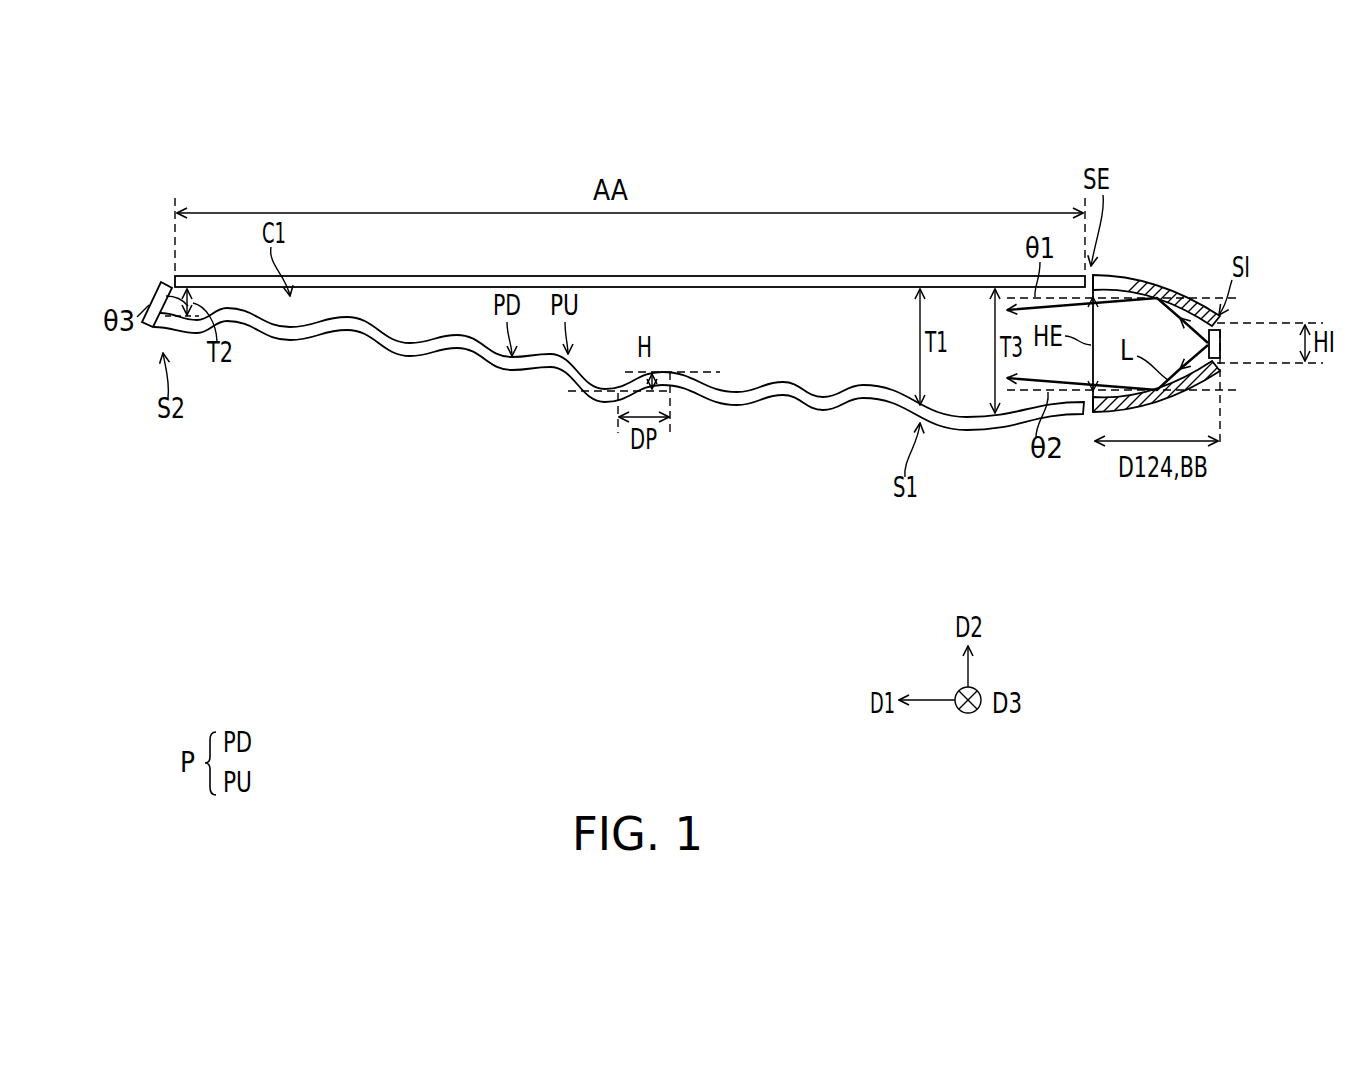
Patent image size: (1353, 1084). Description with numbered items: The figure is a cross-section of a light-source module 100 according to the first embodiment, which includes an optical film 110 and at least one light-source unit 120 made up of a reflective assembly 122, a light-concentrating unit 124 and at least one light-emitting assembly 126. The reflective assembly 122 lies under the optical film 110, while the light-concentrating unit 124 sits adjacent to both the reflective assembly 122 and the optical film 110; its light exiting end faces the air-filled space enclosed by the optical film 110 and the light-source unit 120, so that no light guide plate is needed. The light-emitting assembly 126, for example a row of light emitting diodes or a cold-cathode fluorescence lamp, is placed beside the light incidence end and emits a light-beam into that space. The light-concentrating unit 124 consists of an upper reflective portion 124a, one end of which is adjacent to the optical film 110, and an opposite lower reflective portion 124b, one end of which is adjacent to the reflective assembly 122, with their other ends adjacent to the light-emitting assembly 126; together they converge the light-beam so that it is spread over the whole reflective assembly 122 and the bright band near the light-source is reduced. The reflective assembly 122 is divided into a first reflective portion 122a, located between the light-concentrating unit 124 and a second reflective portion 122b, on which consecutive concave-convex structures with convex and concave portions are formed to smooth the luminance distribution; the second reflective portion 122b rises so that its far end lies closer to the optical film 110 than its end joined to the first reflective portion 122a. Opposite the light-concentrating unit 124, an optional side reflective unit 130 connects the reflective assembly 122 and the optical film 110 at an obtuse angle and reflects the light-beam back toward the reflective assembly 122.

The light-source module 100 is at (1172, 644).
The optical film 110 is at (1010, 283).
The light-source unit 120 is at (190, 502).
The reflective assembly 122 is at (256, 482).
The first reflective portion 122a is at (990, 429).
The second reflective portion 122b is at (737, 399).
The light-concentrating unit 124 is at (256, 553).
The upper reflective portion 124a is at (1195, 299).
The lower reflective portion 124b is at (1188, 393).
The light-emitting assembly 126 is at (1221, 343).
The side reflective unit 130 is at (155, 296).